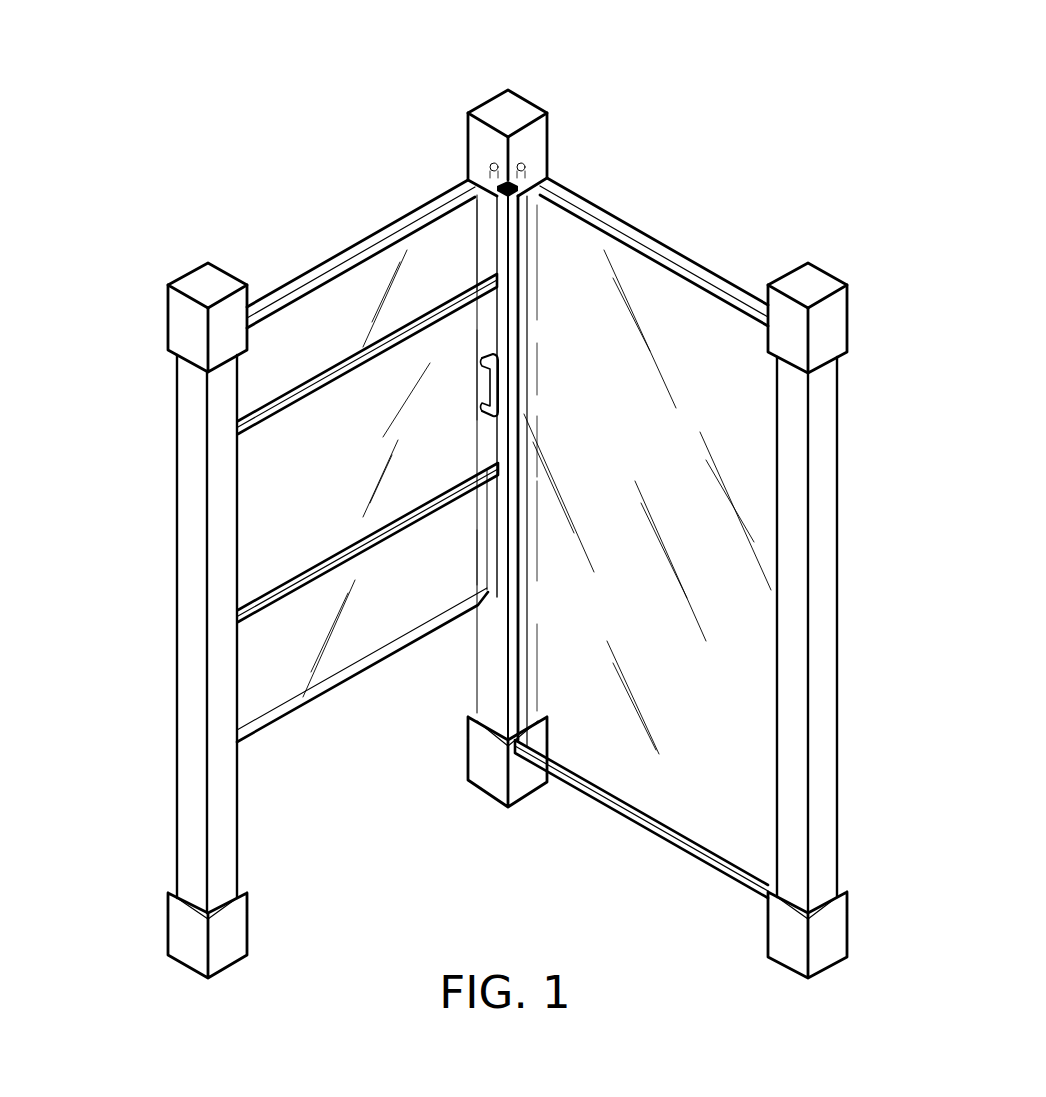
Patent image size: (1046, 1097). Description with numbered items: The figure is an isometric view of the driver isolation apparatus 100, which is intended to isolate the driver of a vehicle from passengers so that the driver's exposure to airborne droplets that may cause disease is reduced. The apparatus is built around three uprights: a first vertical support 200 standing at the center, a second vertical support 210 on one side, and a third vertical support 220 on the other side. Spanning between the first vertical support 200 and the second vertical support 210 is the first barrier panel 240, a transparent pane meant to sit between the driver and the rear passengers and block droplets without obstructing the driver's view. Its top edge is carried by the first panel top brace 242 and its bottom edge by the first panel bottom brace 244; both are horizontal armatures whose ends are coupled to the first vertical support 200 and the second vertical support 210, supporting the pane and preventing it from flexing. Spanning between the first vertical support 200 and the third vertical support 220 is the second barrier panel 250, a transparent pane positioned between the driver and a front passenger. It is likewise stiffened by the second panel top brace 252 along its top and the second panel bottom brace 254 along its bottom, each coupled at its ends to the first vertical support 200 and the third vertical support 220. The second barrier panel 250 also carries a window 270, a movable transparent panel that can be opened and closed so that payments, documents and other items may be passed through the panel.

The driver isolation apparatus 100 is at (766, 118).
The first vertical support 200 is at (498, 108).
The second vertical support 210 is at (812, 290).
The third vertical support 220 is at (197, 290).
The first barrier panel 240 is at (718, 600).
The first panel top brace 242 is at (672, 262).
The first panel bottom brace 244 is at (628, 812).
The second barrier panel 250 is at (257, 377).
The second panel top brace 252 is at (340, 258).
The second panel bottom brace 254 is at (338, 686).
The window 270 is at (455, 335).